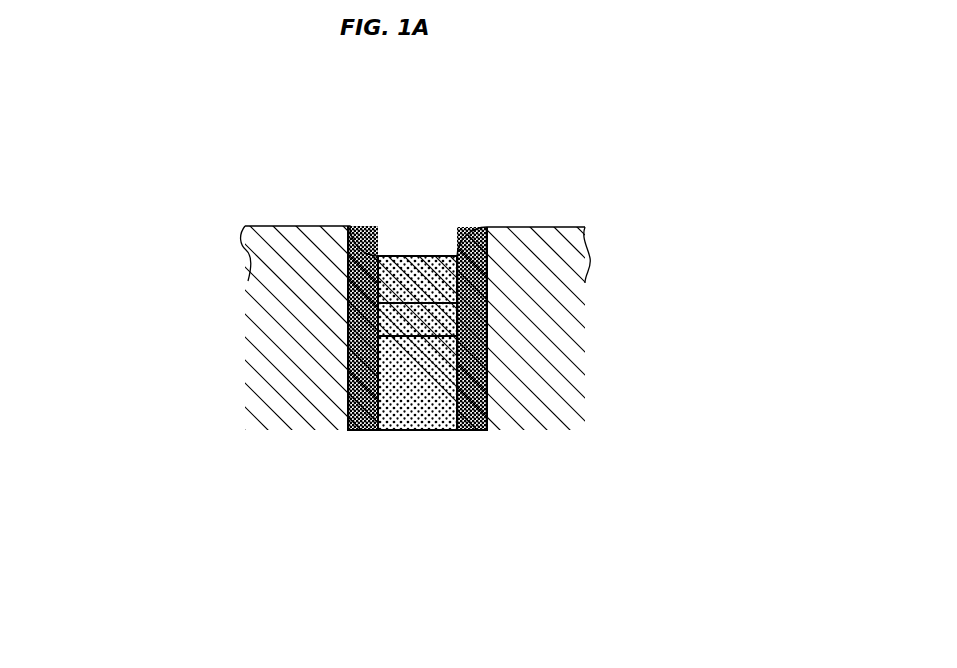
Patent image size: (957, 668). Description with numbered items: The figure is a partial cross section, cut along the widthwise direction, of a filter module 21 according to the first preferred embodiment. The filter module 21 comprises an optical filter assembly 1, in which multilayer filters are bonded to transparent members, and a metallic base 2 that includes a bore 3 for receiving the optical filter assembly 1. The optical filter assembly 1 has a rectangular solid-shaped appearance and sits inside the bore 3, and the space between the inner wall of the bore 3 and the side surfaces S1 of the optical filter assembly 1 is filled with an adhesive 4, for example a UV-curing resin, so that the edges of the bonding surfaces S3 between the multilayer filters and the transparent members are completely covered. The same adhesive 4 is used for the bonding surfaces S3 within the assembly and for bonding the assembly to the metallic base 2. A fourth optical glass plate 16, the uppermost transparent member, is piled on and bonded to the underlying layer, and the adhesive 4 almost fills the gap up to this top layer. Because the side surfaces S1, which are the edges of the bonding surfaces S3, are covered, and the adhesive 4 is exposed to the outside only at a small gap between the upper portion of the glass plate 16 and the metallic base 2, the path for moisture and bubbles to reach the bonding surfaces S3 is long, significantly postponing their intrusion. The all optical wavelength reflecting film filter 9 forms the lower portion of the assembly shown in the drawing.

The filter module 21 is at (0, 0).
The optical filter assembly 1 is at (398, 316).
The metallic base 2 is at (298, 237).
The bore 3 is at (472, 265).
The adhesive 4 is at (475, 272).
The fourth optical glass plate 16 is at (397, 272).
The bonding surface S3 is at (262, 322).
The all optical wavelength reflecting film filter 9 is at (347, 484).
The side surface S1 is at (483, 403).